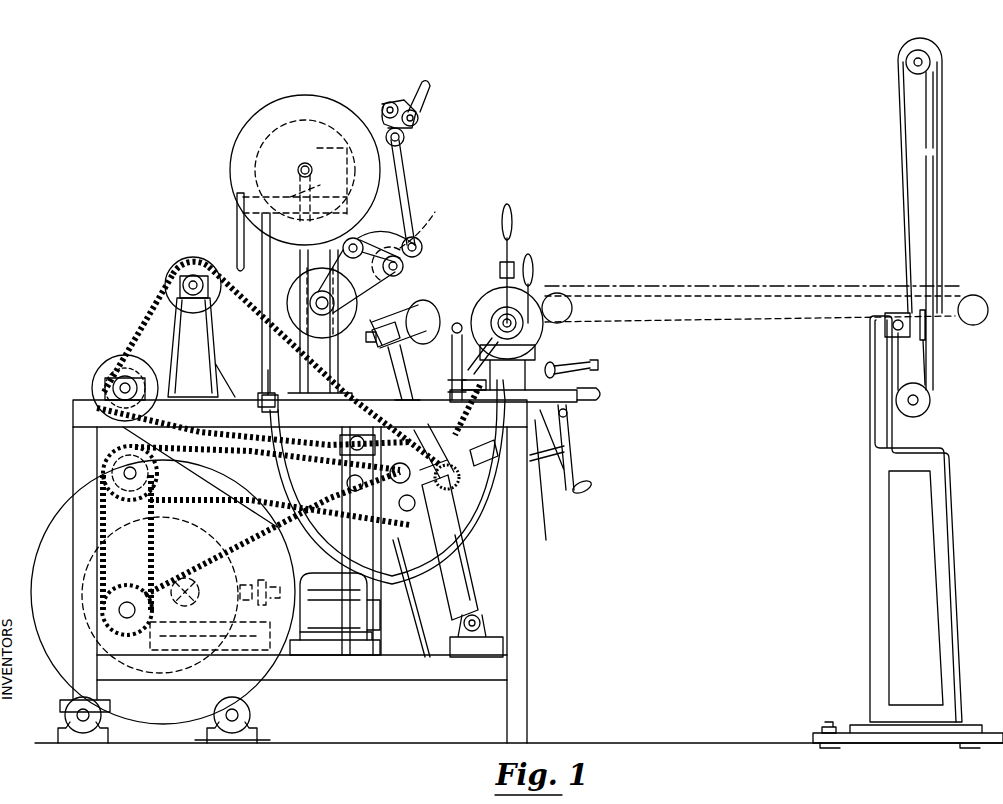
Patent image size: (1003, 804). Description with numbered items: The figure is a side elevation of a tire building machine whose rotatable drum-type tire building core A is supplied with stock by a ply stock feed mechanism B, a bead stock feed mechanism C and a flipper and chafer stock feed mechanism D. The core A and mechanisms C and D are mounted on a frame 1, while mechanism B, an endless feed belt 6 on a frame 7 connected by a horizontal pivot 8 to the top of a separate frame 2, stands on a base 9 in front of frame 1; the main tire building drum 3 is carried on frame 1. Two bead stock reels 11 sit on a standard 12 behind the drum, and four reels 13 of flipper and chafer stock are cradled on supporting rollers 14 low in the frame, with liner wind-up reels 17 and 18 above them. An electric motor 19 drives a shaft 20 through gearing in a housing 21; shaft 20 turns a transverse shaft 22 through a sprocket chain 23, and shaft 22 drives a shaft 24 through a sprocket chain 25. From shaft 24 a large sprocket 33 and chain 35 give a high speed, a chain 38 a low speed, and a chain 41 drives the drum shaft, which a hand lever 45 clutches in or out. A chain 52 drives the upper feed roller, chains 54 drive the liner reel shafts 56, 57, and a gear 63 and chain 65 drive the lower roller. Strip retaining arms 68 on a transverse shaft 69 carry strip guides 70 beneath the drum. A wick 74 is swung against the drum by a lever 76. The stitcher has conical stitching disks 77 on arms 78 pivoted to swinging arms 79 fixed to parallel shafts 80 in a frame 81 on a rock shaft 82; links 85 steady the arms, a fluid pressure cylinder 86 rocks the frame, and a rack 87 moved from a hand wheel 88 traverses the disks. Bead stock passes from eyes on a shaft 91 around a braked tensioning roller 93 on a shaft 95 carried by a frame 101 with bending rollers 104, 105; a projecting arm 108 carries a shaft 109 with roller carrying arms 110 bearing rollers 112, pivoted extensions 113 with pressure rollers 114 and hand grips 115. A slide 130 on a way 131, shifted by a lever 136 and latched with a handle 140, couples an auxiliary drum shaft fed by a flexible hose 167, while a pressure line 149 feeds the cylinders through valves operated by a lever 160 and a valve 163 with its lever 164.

The frame 1 is at (528, 643).
The frame 2 is at (869, 585).
The main tire building drum 3 is at (551, 295).
The endless feed belt 6 is at (897, 231).
The frame 7 is at (925, 182).
The pivot 8 is at (885, 327).
The base 9 is at (840, 725).
The bead stock reels 11 is at (240, 141).
The standard 12 is at (298, 376).
The reels 13 is at (242, 712).
The supporting rollers 14 is at (64, 714).
The liner reels 17 is at (110, 362).
The liner reels 18 is at (183, 259).
The electric motor 19 is at (320, 646).
The shaft 20 is at (200, 594).
The housing 21 is at (260, 586).
The transverse shaft 22 is at (118, 612).
The sprocket chain 23 is at (210, 629).
The shaft 24 is at (110, 466).
The sprocket chain 25 is at (160, 574).
The large sprocket 33 is at (174, 455).
The sprocket chain 35 is at (226, 449).
The sprocket chain 38 is at (278, 406).
The sprocket chain 41 is at (460, 323).
The hand lever 45 is at (516, 218).
The sprocket chain 52 is at (250, 540).
The sprocket chains 54 is at (146, 322).
The shaft 56 is at (116, 384).
The shaft 57 is at (216, 306).
The gear 63 is at (348, 470).
The sprocket chain 65 is at (350, 606).
The strip retaining arms 68 is at (573, 431).
The transverse shaft 69 is at (570, 413).
The strip guide 70 is at (570, 455).
The wick 74 is at (478, 364).
The lever 76 is at (603, 396).
The stitching disks 77 is at (428, 302).
The arms 78 is at (406, 331).
The swinging arms 79 is at (386, 352).
The parallel shafts 80 is at (456, 456).
The frame 81 is at (470, 562).
The transverse rock shaft 82 is at (456, 520).
The link 85 is at (396, 370).
The fluid pressure cylinder 86 is at (449, 592).
The rack 87 is at (472, 586).
The hand wheel 88 is at (575, 492).
The transverse shaft 91 is at (344, 250).
The tensioning roller 93 is at (292, 292).
The transverse shaft 95 is at (359, 340).
The frame 101 is at (368, 280).
The bending roller 104 is at (408, 265).
The bending roller 105 is at (432, 227).
The forwardly projecting arm 108 is at (388, 232).
The transverse shaft 109 is at (416, 238).
The roller carrying arms 110 is at (411, 172).
The roller 112 is at (406, 135).
The pivoted extension 113 is at (392, 101).
The second pressure roller 114 is at (420, 116).
The hand grip portion 115 is at (430, 88).
The slide 130 is at (534, 369).
The way 131 is at (580, 389).
The lever 136 is at (536, 258).
The handle 140 is at (503, 262).
The pressure line 149 is at (454, 410).
The lever 160 is at (598, 366).
The valve 163 is at (284, 170).
The lever 164 is at (299, 172).
The flexible hose 167 is at (492, 484).
The tire building core A is at (496, 300).
The ply stock feed mechanism B is at (712, 280).
The bead stock feed mechanism C is at (358, 114).
The feed mechanism for flipper and chafer stock D is at (60, 530).